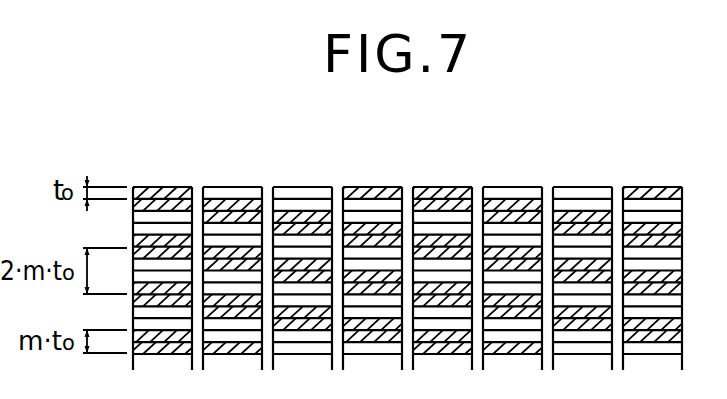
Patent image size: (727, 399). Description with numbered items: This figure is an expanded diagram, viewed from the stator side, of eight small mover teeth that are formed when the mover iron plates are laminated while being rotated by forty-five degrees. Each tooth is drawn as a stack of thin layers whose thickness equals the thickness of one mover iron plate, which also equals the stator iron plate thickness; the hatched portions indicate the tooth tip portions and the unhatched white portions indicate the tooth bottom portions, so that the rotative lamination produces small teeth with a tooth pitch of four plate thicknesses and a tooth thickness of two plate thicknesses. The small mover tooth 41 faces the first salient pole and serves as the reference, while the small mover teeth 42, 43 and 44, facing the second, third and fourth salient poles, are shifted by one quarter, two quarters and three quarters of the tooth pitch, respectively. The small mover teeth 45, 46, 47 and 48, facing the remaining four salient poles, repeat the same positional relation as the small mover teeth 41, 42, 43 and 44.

The small mover tooth 41 is at (166, 186).
The small mover tooth 42 is at (236, 186).
The small mover tooth 43 is at (306, 186).
The small mover tooth 44 is at (376, 186).
The small mover tooth 45 is at (446, 186).
The small mover tooth 46 is at (516, 186).
The small mover tooth 47 is at (586, 186).
The small mover tooth 48 is at (656, 186).